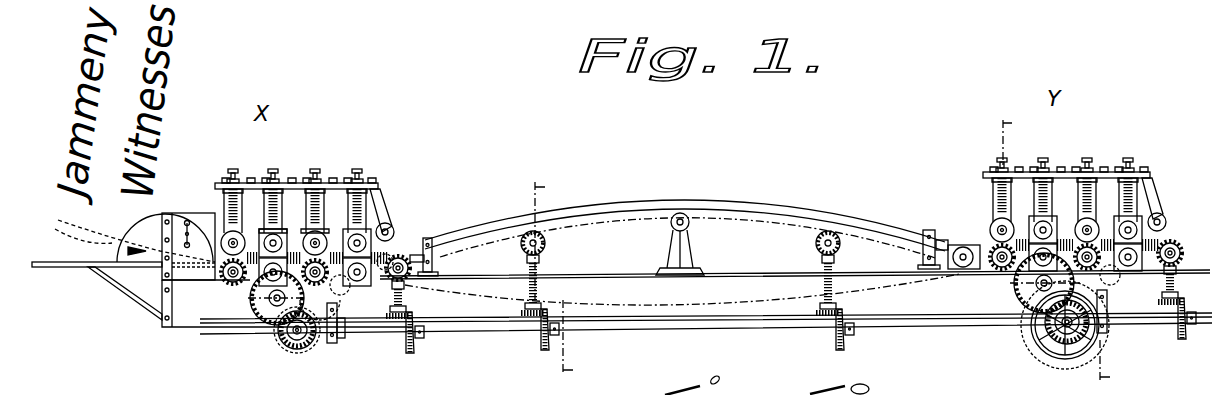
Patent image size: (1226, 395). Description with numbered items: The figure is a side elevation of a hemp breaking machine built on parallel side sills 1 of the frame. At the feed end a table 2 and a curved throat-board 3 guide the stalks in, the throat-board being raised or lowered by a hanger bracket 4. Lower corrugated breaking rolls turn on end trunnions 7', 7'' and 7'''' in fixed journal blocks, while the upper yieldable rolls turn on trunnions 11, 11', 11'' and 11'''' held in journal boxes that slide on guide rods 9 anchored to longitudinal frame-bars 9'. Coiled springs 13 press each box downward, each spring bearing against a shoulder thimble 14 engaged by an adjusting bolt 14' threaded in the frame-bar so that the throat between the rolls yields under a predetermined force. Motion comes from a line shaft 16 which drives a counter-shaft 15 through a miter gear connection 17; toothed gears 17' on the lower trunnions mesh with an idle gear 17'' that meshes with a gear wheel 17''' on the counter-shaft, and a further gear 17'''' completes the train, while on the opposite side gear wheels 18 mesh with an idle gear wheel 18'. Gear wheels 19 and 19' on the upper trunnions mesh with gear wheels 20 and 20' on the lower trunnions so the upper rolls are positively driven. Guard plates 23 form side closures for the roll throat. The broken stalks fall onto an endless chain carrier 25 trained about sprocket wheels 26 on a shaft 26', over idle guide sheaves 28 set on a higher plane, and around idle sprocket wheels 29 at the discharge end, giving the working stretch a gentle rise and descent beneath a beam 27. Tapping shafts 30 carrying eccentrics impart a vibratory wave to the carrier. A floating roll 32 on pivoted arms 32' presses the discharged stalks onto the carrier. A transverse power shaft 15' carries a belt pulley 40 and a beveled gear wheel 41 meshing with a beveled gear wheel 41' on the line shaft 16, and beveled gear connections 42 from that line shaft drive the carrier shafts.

The side sills 1 is at (619, 268).
The table 2 is at (122, 267).
The curved throat-board 3 is at (123, 218).
The hanger bracket 4 is at (553, 278).
The end trunnion 7' is at (294, 218).
The end trunnion 7'' is at (734, 283).
The hidden gear 7'''' is at (410, 244).
The guide rods 9 is at (680, 193).
The frame-bars 9' is at (771, 193).
The trunnion 11 is at (645, 236).
The trunnion 11' is at (650, 225).
The trunnion 11'' is at (742, 223).
The lower roller block 11'''' is at (727, 238).
The coiled springs 13 is at (232, 196).
The shoulder thimble 14 is at (666, 166).
The adjusting bolt 14' is at (687, 155).
The counter-shaft 15 is at (297, 360).
The transverse power shaft 15' is at (1079, 350).
The line shaft 16 is at (476, 337).
The miter gear connection 17 is at (301, 348).
The toothed gears 17' is at (650, 278).
The idle gear 17'' is at (686, 294).
The gear wheel 17''' is at (289, 347).
The wheel outline 17'''' is at (1029, 325).
The gear wheels 18 is at (272, 310).
The idle gear wheel 18' is at (345, 337).
The toothed gear wheel 19 is at (581, 261).
The toothed gear wheel 19' is at (784, 191).
The gear wheel 20 is at (644, 274).
The gear wheel 20' is at (337, 311).
The guard plates 23 is at (432, 245).
The endless chain carrier 25 is at (687, 240).
The sprocket wheels 26 is at (812, 254).
The shaft 26' is at (800, 258).
The beam 27 is at (762, 205).
The idle guide sheaves 28 is at (690, 238).
The idle sprocket wheels 29 is at (955, 268).
The tapping shafts 30 is at (547, 247).
The floating roll 32 is at (795, 234).
The arms 32' is at (782, 215).
The belt pulley 40 is at (1022, 342).
The beveled gear wheel 41 is at (1064, 334).
The beveled gear wheel 41' is at (1091, 323).
The beveled gear connections 42 is at (404, 294).